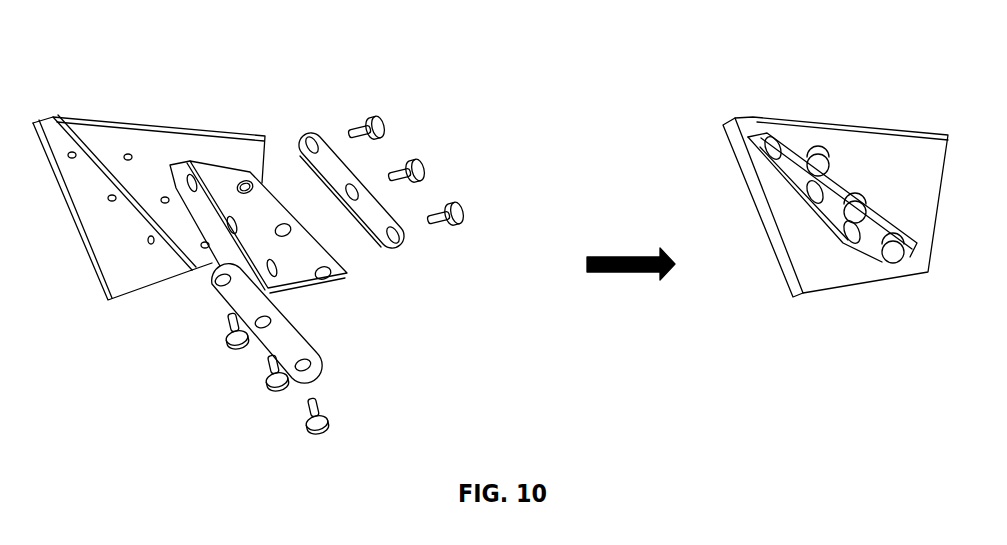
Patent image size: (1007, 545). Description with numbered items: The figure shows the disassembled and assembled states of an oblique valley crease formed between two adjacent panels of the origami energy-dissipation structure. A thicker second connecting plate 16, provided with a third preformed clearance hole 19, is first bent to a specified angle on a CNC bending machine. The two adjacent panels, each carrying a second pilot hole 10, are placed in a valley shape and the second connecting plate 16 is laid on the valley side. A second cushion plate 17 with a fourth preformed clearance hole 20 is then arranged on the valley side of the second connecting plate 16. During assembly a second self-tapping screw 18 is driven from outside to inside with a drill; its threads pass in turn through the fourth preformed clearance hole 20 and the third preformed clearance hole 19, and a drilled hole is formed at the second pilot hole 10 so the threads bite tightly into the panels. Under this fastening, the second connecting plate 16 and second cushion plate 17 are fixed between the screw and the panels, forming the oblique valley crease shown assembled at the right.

The second pilot hole 10 is at (158, 232).
The second connecting plate 16 is at (300, 248).
The second cushion plate 17 is at (327, 143).
The second self-tapping screw 18 is at (482, 188).
The third preformed clearance hole 19 is at (243, 185).
The fourth preformed clearance hole 20 is at (398, 233).